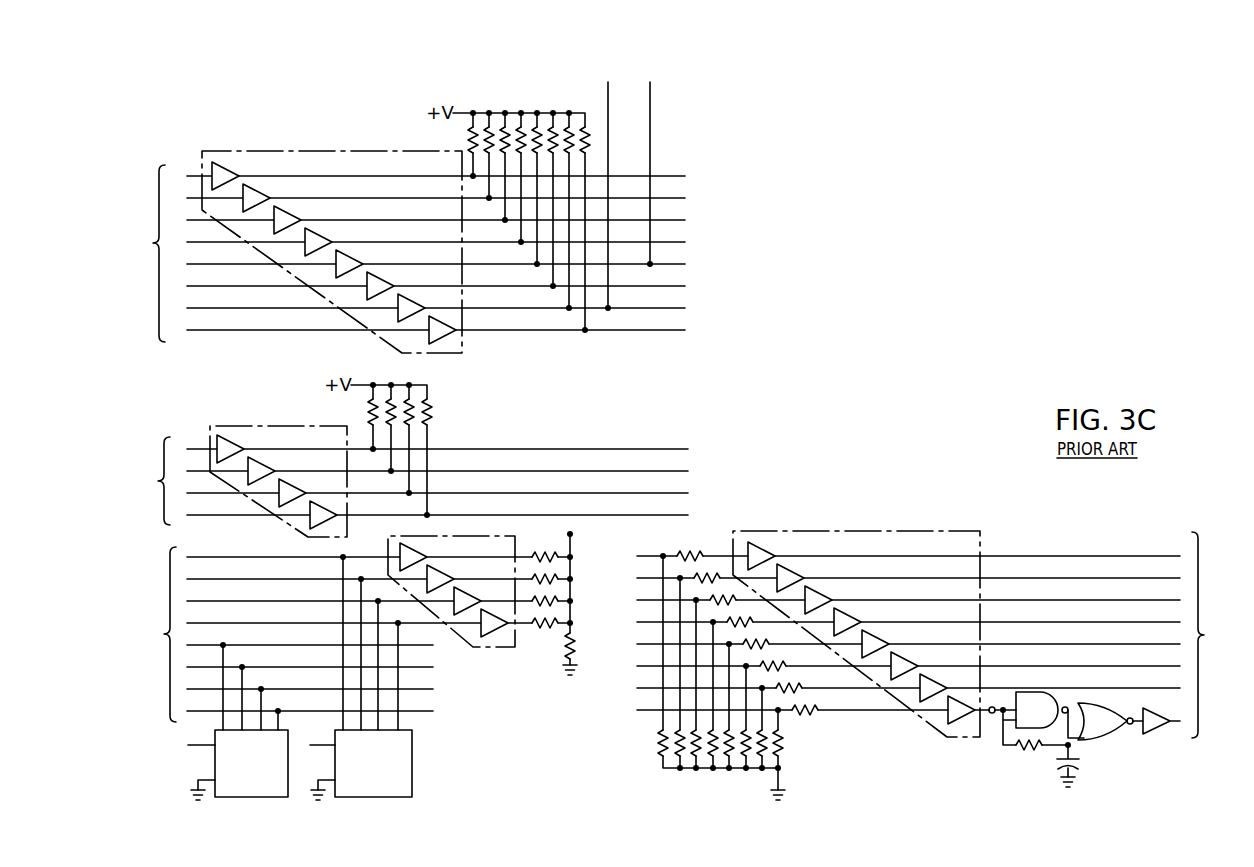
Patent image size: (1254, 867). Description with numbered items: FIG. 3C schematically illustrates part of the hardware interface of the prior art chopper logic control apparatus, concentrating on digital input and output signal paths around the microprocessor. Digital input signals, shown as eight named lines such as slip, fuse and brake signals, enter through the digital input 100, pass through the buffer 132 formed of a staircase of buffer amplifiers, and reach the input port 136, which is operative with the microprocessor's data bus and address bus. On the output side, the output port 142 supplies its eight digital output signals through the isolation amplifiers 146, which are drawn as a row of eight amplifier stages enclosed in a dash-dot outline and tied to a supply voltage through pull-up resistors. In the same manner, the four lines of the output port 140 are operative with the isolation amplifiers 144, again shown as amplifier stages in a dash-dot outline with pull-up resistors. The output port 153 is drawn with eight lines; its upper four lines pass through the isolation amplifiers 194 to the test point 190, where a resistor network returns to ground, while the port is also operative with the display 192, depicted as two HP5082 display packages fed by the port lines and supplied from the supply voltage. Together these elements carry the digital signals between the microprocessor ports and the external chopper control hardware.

The digital input 100 is at (681, 538).
The buffer 132 is at (807, 531).
The input port 136 is at (1213, 611).
The output port 140 is at (114, 456).
The output port 142 is at (112, 228).
The isolation amplifiers 144 is at (264, 426).
The isolation amplifiers 146 is at (283, 151).
The output port 153 is at (114, 613).
The test point 190 is at (570, 534).
The display 192 is at (321, 730).
The isolation amplifiers 194 is at (395, 536).